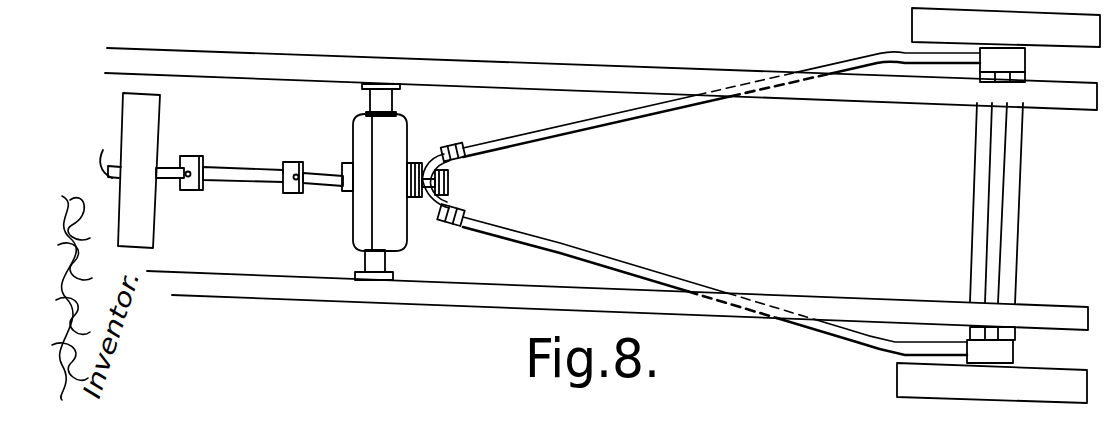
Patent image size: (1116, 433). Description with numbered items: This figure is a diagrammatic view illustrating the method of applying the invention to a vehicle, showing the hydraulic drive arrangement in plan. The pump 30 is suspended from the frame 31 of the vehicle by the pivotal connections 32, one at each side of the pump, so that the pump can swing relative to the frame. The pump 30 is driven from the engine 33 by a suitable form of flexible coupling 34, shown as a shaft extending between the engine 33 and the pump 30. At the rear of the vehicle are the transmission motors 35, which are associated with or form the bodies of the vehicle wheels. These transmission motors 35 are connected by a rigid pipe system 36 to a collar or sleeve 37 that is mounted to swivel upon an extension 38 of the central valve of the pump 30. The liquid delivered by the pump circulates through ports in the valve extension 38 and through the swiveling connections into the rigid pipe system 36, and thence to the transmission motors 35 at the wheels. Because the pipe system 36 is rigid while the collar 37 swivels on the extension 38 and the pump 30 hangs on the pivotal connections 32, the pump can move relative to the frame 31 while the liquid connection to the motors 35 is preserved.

The pump 30 is at (395, 182).
The frame 31 is at (601, 189).
The pivotal connections 32 is at (393, 97).
The engine 33 is at (117, 180).
The flexible coupling 34 is at (249, 182).
The transmission motors 35 is at (998, 205).
The rigid pipe system 36 is at (450, 190).
The collar or sleeve 37 is at (442, 140).
The extension of the central valve 38 is at (450, 230).